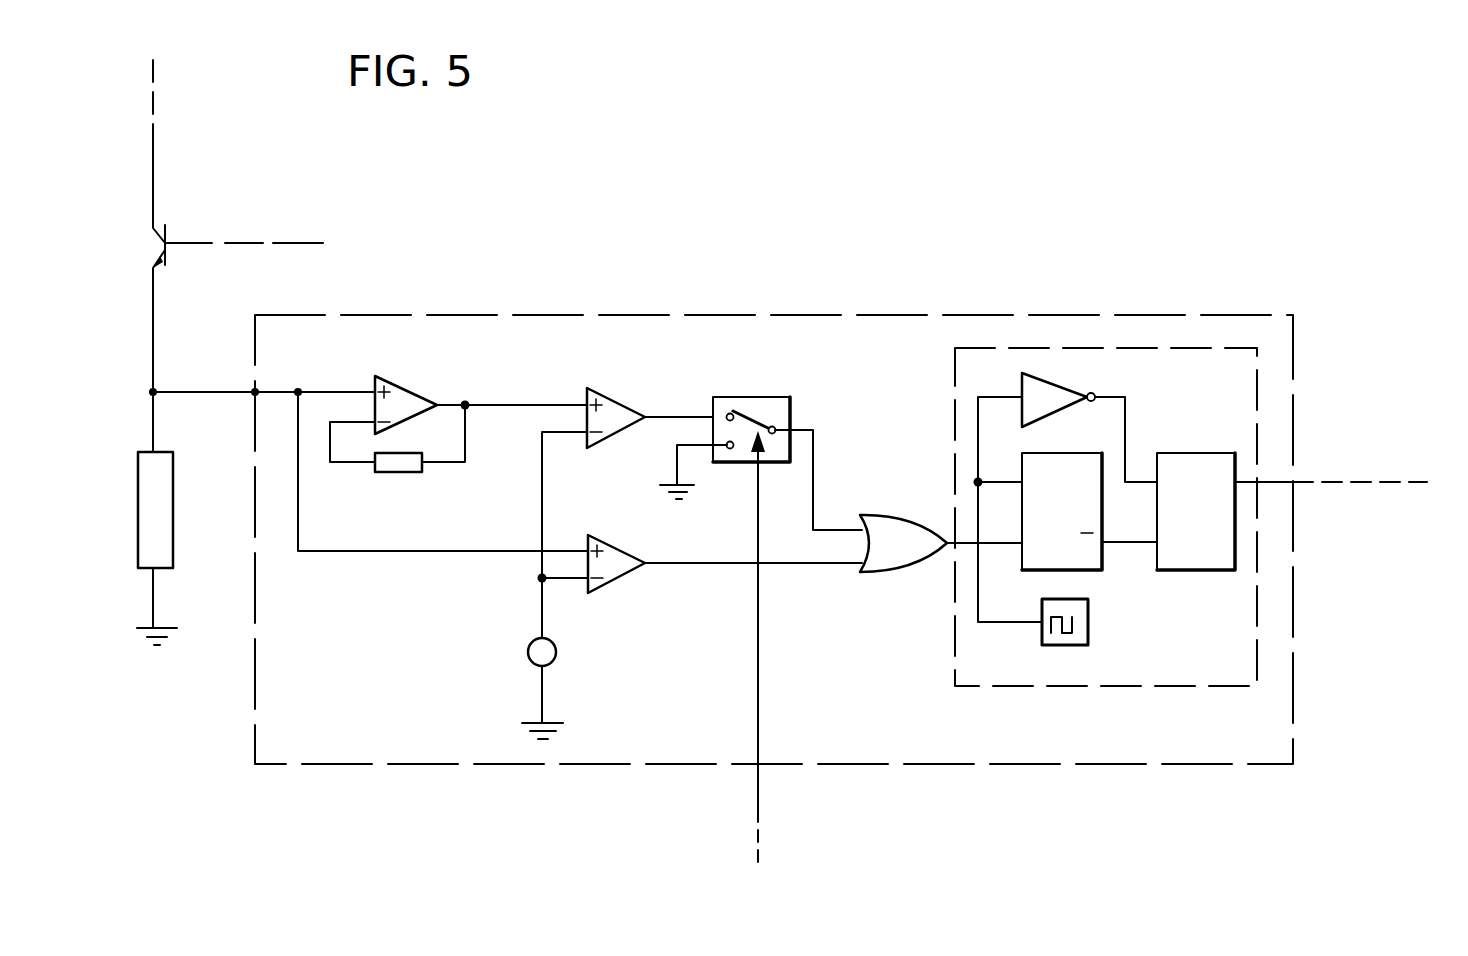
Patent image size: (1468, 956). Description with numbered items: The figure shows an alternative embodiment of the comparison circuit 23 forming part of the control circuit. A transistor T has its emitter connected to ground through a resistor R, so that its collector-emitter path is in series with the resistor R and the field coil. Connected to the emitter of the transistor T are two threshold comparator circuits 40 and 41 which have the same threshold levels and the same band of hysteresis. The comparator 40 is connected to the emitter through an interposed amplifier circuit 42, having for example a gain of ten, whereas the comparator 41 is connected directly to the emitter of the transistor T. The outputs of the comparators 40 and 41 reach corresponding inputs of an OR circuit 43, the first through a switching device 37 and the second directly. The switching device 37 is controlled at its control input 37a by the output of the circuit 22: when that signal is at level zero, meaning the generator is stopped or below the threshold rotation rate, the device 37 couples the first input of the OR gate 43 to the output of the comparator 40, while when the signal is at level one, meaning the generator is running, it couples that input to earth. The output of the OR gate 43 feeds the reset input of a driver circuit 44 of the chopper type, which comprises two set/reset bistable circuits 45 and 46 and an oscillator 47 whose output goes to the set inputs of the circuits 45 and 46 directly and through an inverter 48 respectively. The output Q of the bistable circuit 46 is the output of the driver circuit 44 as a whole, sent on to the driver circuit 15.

The transistor T is at (165, 240).
The resistor R is at (150, 508).
The comparison circuit 23 is at (255, 683).
The amplifier circuit 42 is at (420, 386).
The threshold comparator circuit 40 is at (608, 415).
The threshold comparator circuit 41 is at (610, 560).
The switching device 37 is at (770, 396).
The switch control input 37a is at (753, 465).
The OR circuit 43 is at (885, 530).
The driver circuit 44 is at (1012, 348).
The bistable circuit 45 is at (1078, 462).
The bistable circuit 46 is at (1180, 458).
The oscillator 47 is at (1090, 630).
The inverter 48 is at (1063, 393).
The driver circuit 15 is at (1360, 455).
The circuit 22 is at (885, 802).